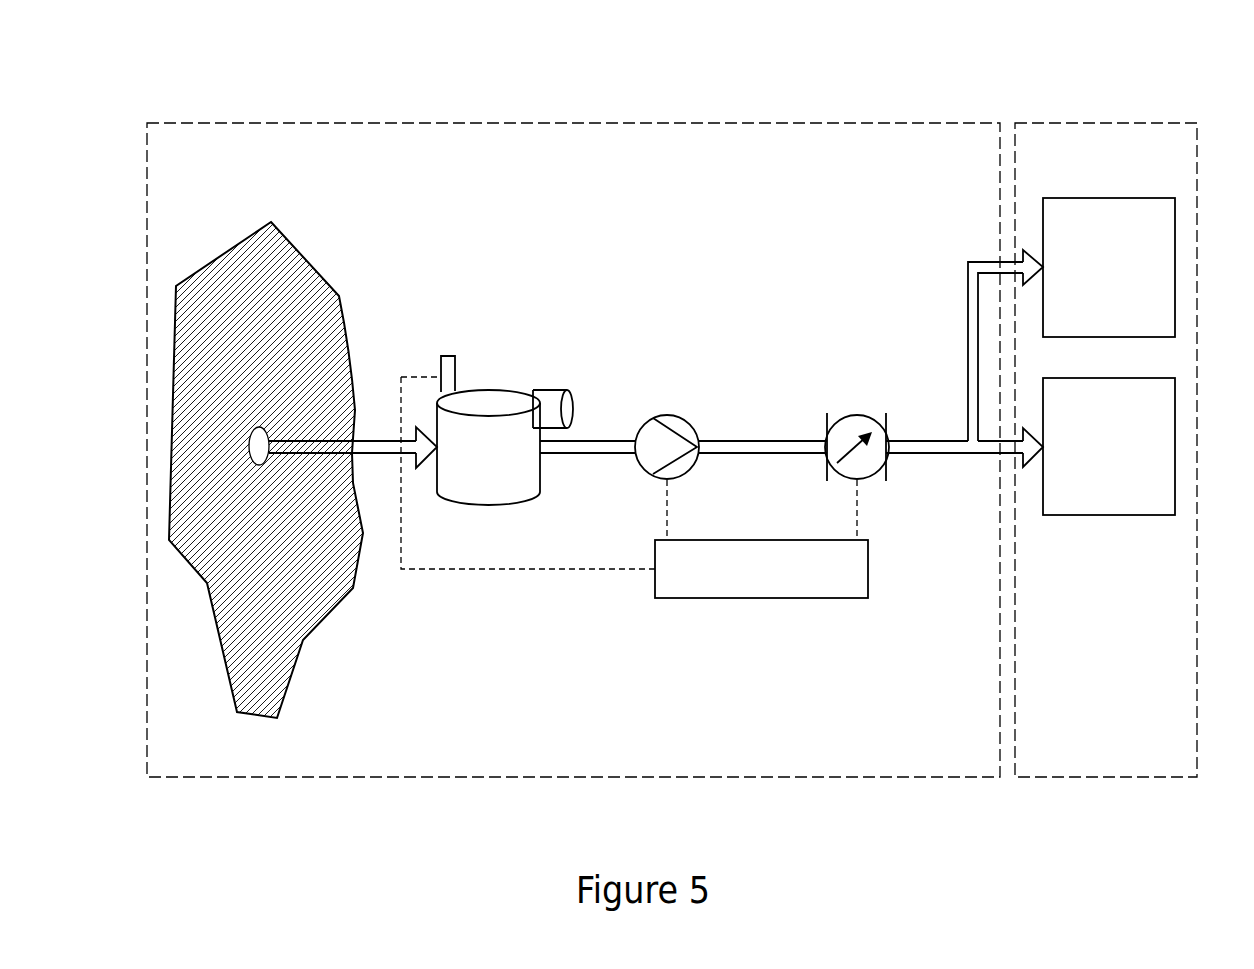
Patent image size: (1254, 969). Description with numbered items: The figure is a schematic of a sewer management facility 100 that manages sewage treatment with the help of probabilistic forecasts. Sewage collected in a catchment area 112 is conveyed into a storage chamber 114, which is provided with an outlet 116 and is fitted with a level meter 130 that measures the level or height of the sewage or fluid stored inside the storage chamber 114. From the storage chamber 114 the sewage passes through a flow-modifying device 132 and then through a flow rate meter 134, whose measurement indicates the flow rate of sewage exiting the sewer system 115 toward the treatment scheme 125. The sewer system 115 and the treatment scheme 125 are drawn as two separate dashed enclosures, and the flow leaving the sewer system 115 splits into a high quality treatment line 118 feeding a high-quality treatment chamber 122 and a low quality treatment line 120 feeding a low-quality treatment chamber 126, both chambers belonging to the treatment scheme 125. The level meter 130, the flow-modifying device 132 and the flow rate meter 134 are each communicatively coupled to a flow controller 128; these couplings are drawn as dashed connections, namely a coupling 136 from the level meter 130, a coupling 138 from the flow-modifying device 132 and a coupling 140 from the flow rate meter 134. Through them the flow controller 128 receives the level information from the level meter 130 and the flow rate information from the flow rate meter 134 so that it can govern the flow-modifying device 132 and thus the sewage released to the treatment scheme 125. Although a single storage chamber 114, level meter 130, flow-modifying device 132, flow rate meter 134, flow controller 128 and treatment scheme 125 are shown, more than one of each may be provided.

The sewer management facility 100 is at (255, 58).
The catchment area 112 is at (251, 233).
The storage chamber 114 is at (488, 390).
The sewer system 115 is at (563, 122).
The outlet 116 is at (552, 390).
The high quality treatment line 118 is at (983, 455).
The low quality treatment line 120 is at (968, 258).
The high-quality treatment chamber 122 is at (1108, 515).
The treatment scheme 125 is at (1100, 122).
The low-quality treatment chamber 126 is at (1110, 198).
The flow controller 128 is at (762, 598).
The level meter 130 is at (448, 355).
The flow-modifying device 132 is at (668, 414).
The flow rate meter 134 is at (858, 414).
The dashed connection 136 is at (436, 572).
The dashed connection 138 is at (667, 515).
The dashed connection 140 is at (857, 515).